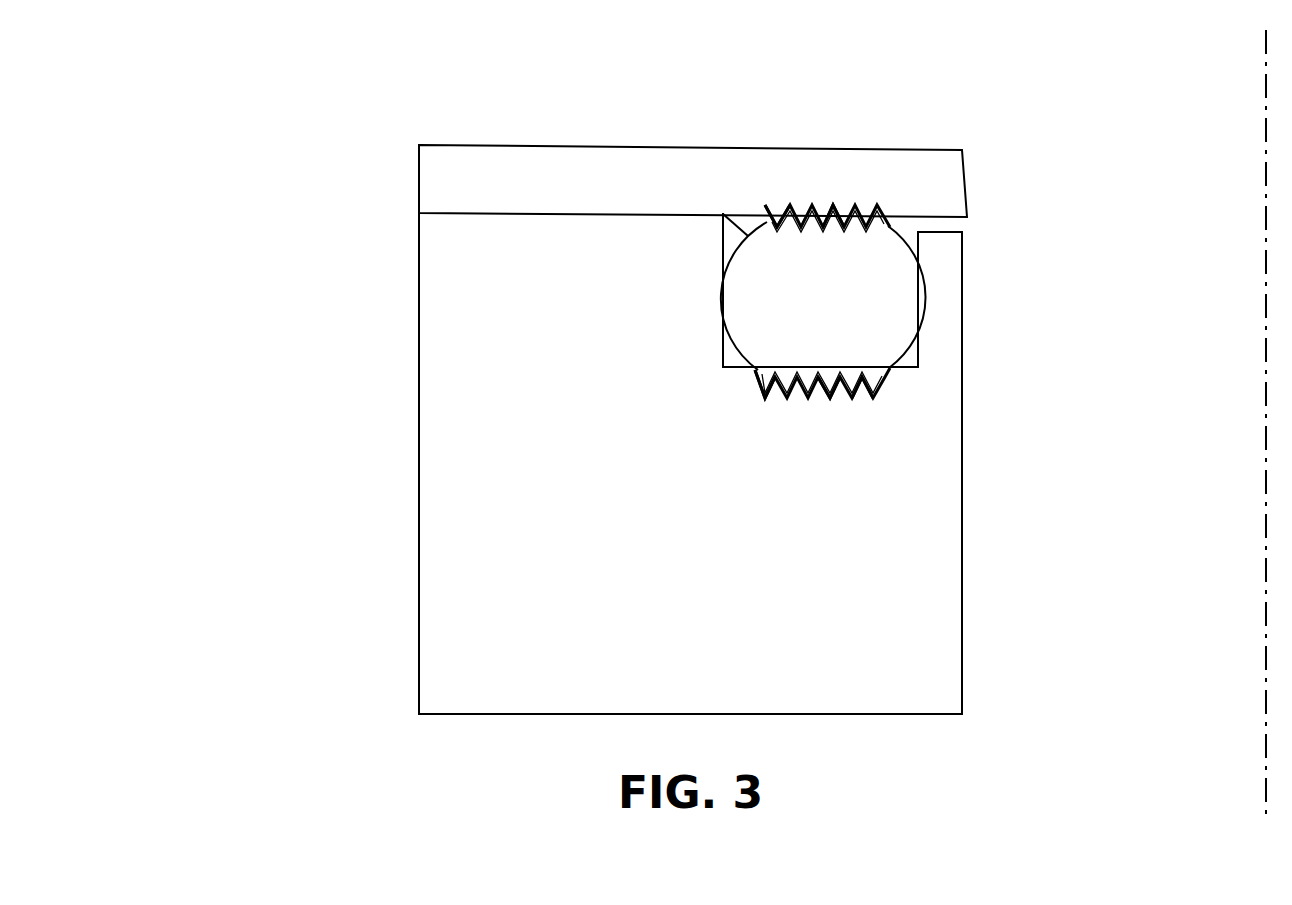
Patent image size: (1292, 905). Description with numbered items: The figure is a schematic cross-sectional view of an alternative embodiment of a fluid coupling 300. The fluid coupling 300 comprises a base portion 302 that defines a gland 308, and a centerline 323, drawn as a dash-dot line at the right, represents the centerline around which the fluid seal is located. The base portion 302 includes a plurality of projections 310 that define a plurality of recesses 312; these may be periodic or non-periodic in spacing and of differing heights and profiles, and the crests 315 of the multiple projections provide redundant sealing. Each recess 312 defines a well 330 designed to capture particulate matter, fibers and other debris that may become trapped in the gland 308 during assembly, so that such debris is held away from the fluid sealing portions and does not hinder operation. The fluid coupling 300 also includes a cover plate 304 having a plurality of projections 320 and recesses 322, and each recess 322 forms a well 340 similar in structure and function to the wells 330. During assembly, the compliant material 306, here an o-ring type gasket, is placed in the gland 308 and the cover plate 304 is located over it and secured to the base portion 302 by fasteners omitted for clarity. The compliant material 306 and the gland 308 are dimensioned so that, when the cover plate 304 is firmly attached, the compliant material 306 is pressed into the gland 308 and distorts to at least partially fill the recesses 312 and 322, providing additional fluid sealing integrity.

The fluid coupling 300 is at (256, 162).
The base portion 302 is at (419, 468).
The cover plate 304 is at (419, 181).
The compliant material 306 is at (823, 296).
The gland 308 is at (912, 242).
The projections 310 is at (771, 398).
The recesses 312 is at (760, 379).
The crests 315 is at (866, 377).
The projections 320 is at (764, 205).
The recesses 322 is at (780, 205).
The centerline 323 is at (1266, 97).
The well 330 is at (832, 387).
The well 340 is at (833, 223).